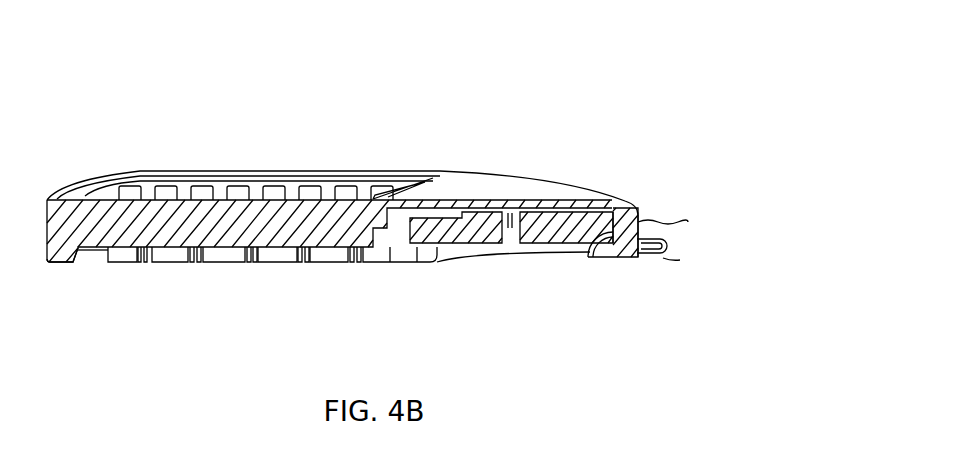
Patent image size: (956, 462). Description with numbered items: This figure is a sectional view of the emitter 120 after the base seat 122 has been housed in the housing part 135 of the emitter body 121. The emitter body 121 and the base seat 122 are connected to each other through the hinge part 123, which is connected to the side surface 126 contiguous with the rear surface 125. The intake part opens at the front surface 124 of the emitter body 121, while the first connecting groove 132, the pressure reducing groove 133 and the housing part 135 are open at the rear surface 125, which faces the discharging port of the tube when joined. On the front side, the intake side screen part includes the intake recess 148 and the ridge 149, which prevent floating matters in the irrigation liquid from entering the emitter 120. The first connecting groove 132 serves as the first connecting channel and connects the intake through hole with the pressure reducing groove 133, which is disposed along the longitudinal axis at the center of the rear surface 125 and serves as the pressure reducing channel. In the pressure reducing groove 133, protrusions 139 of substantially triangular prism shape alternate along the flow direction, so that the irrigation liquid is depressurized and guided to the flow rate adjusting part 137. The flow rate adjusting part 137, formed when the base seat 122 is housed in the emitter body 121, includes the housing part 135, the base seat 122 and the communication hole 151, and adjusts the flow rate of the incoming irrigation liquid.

The emitter 120 is at (700, 97).
The emitter body 121 is at (85, 196).
The base seat 122 is at (597, 212).
The hinge part 123 is at (668, 250).
The front surface 124 is at (220, 170).
The rear surface 125 is at (49, 264).
The side surface 126 is at (656, 223).
The first connecting groove 132 is at (75, 262).
The pressure reducing groove 133 is at (320, 262).
The housing part 135 is at (594, 260).
The flow rate adjusting part 137 is at (567, 138).
The protrusion 139 is at (252, 262).
The intake recess 148 is at (402, 188).
The ridge 149 is at (340, 188).
The communication hole 151 is at (510, 217).